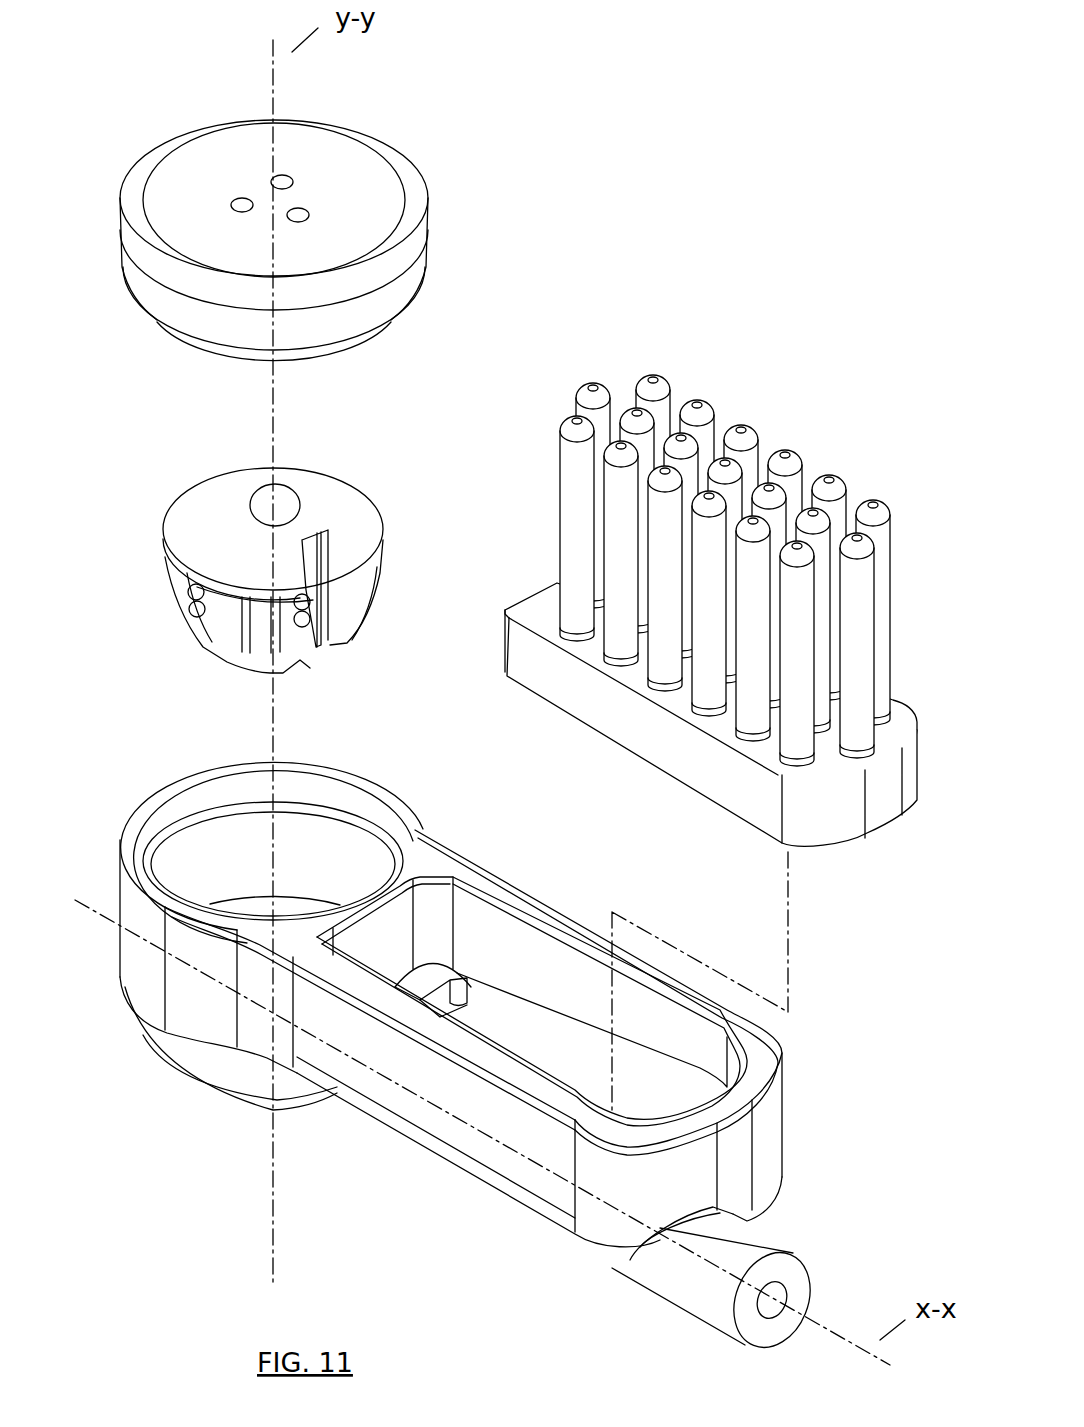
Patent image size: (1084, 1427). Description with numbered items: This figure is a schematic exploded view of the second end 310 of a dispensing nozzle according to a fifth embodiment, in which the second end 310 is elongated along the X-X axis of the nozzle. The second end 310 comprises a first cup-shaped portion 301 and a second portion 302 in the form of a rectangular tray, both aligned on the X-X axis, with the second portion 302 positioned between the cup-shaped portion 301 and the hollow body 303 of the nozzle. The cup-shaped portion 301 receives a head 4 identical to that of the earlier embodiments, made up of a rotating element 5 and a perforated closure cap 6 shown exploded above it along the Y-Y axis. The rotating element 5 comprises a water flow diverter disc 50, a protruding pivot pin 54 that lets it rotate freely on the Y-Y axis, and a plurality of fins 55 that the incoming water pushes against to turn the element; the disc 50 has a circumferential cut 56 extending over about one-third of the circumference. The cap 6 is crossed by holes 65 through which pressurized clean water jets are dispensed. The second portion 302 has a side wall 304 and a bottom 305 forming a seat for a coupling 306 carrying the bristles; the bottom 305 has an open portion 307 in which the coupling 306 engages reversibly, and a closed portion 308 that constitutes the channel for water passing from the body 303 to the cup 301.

The head 4 is at (447, 528).
The rotating element 5 is at (374, 516).
The closure cap 6 is at (380, 374).
The water flow diverter disc 50 is at (325, 504).
The pivot pin 54 is at (262, 510).
The fins 55 is at (285, 668).
The circumferential cut 56 is at (338, 545).
The holes for dispensing pressurized water jets 65 is at (293, 175).
The first cup-shaped portion 301 is at (153, 993).
The second portion 302 is at (507, 1173).
The hollow body 303 is at (700, 1282).
The side wall 304 is at (768, 1135).
The bottom 305 is at (433, 972).
The coupling for the bristles 306 is at (525, 668).
The open portion 307 is at (536, 1050).
The closed portion 308 is at (407, 1146).
The second end 310 is at (197, 1159).